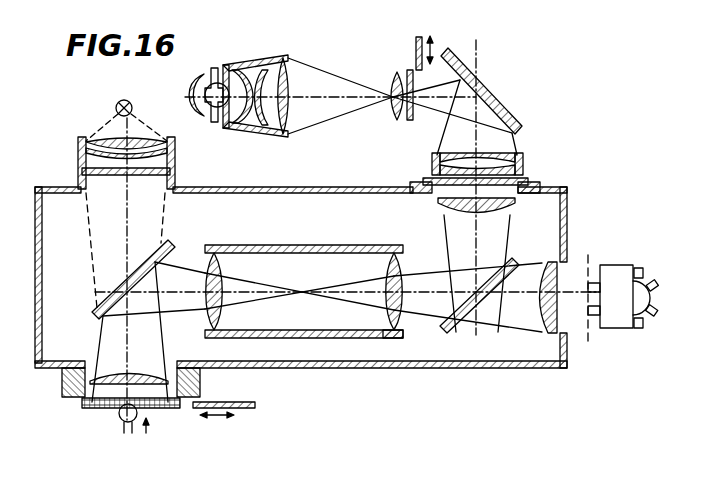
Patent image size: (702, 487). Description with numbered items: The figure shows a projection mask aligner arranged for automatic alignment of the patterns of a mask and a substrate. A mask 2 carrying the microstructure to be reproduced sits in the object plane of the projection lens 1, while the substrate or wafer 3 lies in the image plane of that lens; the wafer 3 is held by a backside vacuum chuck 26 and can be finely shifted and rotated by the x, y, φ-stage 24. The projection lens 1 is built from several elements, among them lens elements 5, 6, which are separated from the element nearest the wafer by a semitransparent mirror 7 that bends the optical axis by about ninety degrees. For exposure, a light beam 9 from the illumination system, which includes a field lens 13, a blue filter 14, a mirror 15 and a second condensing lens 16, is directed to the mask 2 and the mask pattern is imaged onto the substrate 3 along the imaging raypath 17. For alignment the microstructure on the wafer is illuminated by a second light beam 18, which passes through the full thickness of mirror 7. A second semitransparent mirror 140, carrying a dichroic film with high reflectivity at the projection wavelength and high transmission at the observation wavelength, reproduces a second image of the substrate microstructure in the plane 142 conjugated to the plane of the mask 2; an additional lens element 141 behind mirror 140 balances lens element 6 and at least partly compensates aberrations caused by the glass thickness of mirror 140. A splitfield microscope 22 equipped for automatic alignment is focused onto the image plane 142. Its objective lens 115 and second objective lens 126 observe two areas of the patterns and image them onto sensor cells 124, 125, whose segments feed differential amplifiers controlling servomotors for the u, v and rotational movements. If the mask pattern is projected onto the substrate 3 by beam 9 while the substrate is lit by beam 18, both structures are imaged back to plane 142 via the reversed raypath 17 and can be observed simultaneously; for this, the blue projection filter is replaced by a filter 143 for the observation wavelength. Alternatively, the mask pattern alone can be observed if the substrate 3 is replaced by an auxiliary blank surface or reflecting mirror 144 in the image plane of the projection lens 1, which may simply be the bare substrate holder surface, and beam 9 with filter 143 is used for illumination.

The projection lens 1 is at (378, 368).
The mask 2 is at (528, 181).
The substrate or wafer 3 is at (84, 401).
The lens element 5 is at (402, 338).
The lens element 6 is at (514, 203).
The semitransparent mirror 7 is at (94, 312).
The light beam 9 is at (322, 72).
The field lens 13 is at (394, 75).
The blue filter 14 is at (416, 37).
The mirror 15 is at (488, 91).
The second condensing lens 16 is at (433, 165).
The imaging raypath 17 is at (254, 296).
The second illuminating light beam 18 is at (91, 236).
The splitfield microscope 22 is at (618, 329).
The x, y, φ-stage 24 is at (62, 380).
The backside vacuum chuck 26 is at (91, 411).
The objective lens 115 is at (590, 283).
The sensor cell 124 is at (638, 268).
The sensor cell 125 is at (641, 327).
The second objective lens 126 is at (590, 316).
The second semitransparent mirror 140 is at (455, 333).
The lens element 141 is at (552, 336).
The image plane 142 is at (589, 345).
The filter 143 is at (410, 70).
The auxiliary blank surface or reflecting mirror 144 is at (255, 404).